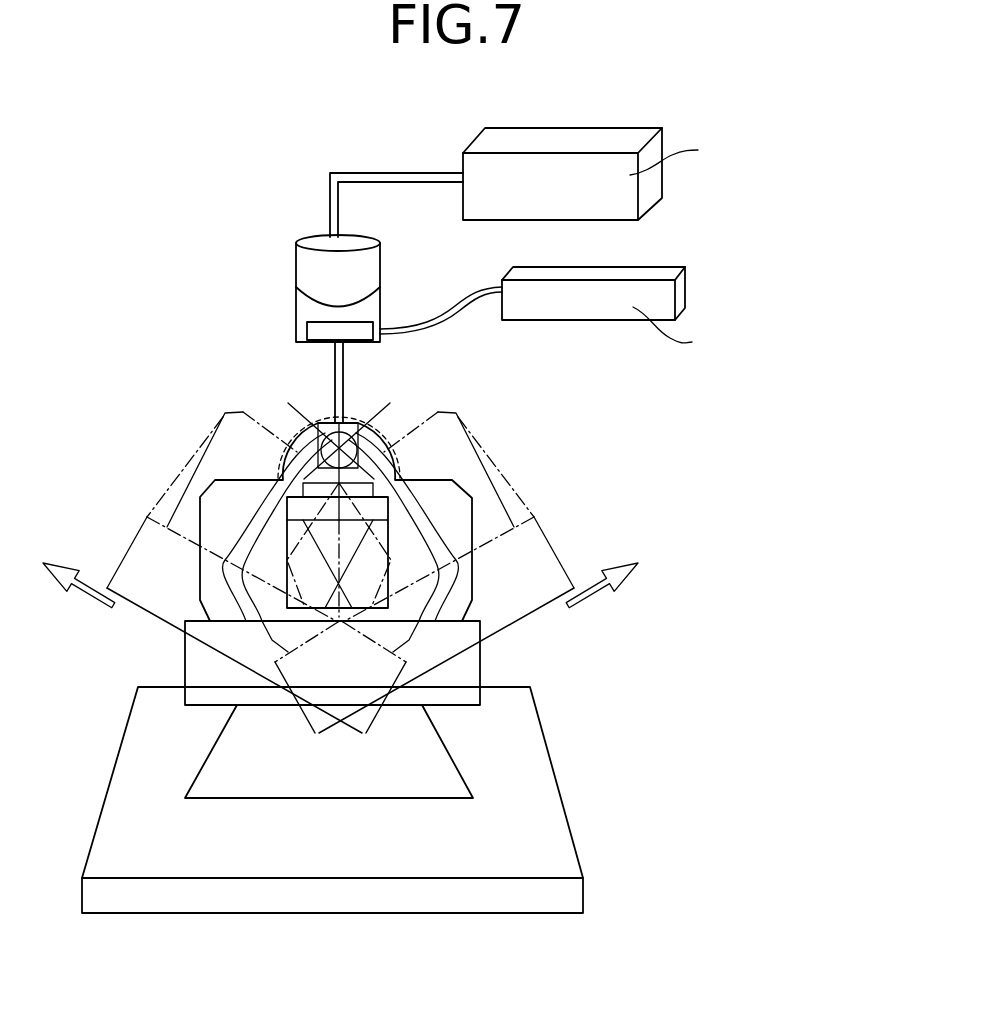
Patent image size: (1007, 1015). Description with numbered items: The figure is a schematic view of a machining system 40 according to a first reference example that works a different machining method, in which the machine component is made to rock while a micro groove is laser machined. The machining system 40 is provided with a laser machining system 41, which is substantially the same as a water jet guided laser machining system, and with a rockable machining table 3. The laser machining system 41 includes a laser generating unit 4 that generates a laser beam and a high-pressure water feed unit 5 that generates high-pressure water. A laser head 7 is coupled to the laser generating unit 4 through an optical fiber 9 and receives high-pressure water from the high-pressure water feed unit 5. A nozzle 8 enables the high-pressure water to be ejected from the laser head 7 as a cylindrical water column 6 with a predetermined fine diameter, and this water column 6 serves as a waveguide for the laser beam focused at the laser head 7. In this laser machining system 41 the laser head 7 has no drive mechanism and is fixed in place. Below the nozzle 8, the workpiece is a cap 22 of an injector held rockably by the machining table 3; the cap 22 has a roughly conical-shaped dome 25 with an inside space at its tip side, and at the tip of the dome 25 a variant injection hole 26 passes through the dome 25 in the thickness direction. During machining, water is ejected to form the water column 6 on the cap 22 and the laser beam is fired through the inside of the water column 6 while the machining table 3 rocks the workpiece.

The machining table 3 is at (480, 665).
The laser generating unit 4 is at (617, 128).
The high-pressure water feed unit 5 is at (653, 267).
The water column 6 is at (335, 372).
The laser head 7 is at (295, 250).
The nozzle 8 is at (317, 320).
The optical fiber 9 is at (405, 170).
The cap 22 is at (243, 478).
The dome 25 is at (397, 453).
The injection hole 26 is at (347, 420).
The machining system 40 is at (124, 321).
The laser machining system 41 is at (563, 387).